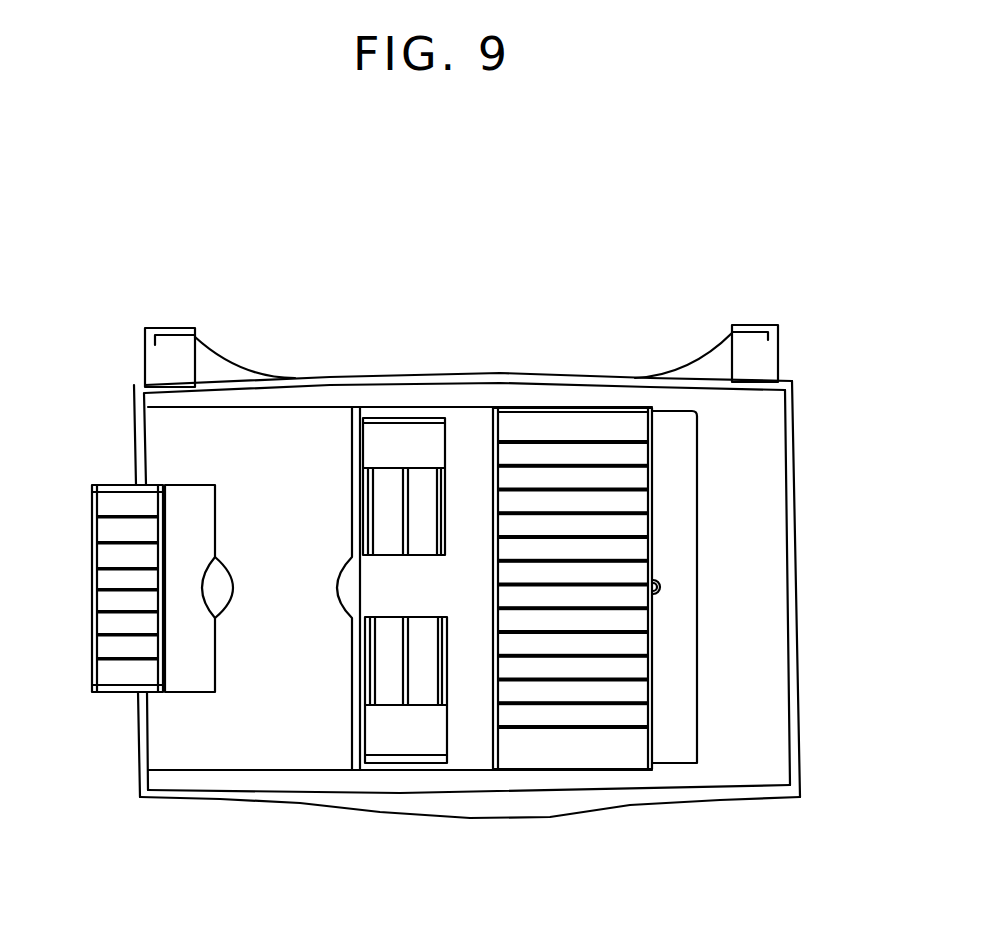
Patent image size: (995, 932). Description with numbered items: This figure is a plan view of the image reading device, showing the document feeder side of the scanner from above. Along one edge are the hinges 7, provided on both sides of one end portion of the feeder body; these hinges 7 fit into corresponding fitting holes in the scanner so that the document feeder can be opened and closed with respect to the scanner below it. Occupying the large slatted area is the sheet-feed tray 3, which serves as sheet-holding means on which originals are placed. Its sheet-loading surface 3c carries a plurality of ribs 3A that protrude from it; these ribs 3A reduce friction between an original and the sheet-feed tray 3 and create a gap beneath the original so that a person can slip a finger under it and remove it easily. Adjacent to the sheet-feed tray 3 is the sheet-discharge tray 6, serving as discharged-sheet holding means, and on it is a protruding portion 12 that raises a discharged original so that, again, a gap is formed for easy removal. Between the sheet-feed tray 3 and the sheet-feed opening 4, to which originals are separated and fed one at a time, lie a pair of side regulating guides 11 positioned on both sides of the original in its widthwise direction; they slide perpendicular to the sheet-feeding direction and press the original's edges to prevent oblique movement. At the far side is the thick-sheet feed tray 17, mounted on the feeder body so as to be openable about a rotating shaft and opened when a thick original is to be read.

The sheet-feed tray 3 is at (679, 507).
The sheet-loading surface 3c is at (595, 423).
The ribs 3A is at (627, 511).
The sheet-feed opening 4 is at (361, 587).
The sheet-discharge tray 6 is at (678, 443).
The hinges 7 is at (160, 367).
The side regulating guides 11 is at (428, 430).
The protruding portion 12 is at (668, 587).
The thick-sheet feed tray 17 is at (108, 503).